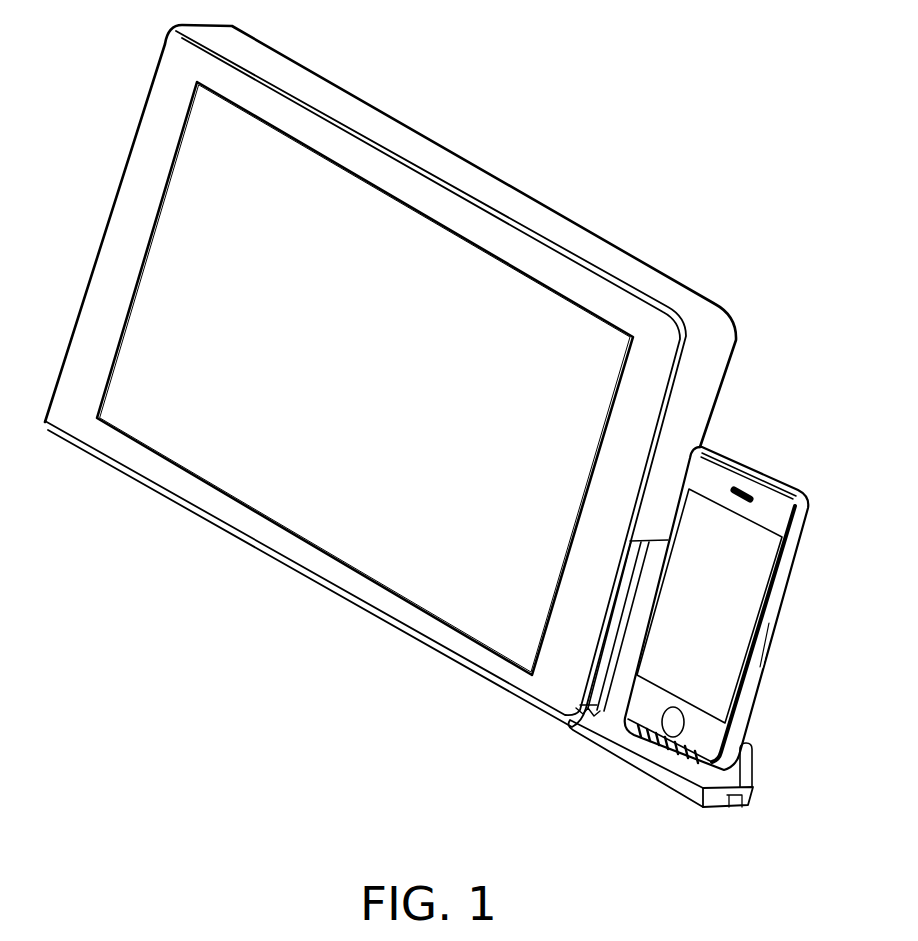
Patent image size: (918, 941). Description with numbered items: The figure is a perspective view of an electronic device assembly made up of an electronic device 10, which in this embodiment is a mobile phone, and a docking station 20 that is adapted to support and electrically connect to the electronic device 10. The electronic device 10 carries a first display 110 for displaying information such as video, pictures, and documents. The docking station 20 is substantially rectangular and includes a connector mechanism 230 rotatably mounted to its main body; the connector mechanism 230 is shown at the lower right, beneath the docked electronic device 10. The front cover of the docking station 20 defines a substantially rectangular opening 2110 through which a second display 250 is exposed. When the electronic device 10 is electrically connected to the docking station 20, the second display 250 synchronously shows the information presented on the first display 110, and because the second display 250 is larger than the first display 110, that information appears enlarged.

The docking station 20 is at (510, 198).
The opening 2110 is at (633, 333).
The second display 250 is at (277, 473).
The connector mechanism 230 is at (660, 772).
The electronic device 10 is at (733, 473).
The first display 110 is at (733, 582).